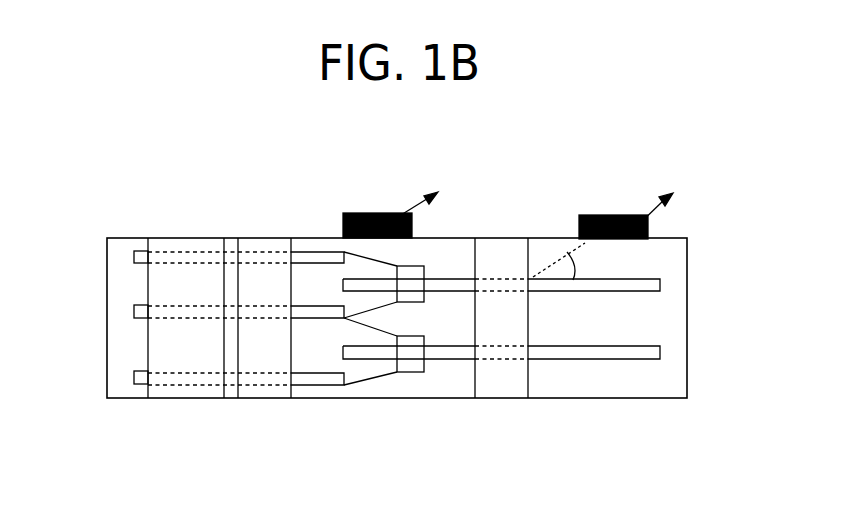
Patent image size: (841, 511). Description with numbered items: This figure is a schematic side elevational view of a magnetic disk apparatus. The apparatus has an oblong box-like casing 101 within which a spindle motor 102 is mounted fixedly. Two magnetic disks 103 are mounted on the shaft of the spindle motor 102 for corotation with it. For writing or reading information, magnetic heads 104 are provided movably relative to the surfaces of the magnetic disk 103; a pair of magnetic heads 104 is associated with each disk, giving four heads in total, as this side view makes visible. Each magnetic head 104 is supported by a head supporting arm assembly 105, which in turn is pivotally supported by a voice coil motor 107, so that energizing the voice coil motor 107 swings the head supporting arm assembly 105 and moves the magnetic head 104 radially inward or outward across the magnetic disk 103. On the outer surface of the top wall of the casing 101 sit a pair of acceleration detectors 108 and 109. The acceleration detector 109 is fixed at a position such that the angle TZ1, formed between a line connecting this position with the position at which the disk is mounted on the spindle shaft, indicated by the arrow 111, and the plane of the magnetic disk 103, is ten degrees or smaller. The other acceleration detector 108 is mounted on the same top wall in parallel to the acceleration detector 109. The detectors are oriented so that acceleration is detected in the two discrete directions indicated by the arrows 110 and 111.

The box-like casing 101 is at (125, 327).
The spindle motor 102 is at (507, 380).
The magnetic disk 103 is at (658, 285).
The magnetic head 104 is at (410, 365).
The head supporting arm assembly 105 is at (321, 258).
The voice coil motor 107 is at (180, 285).
The acceleration detector 108 is at (350, 213).
The acceleration detector 109 is at (587, 215).
The arrow 110 is at (408, 208).
The arrow 111 is at (647, 207).
The angle TZ1 is at (575, 267).